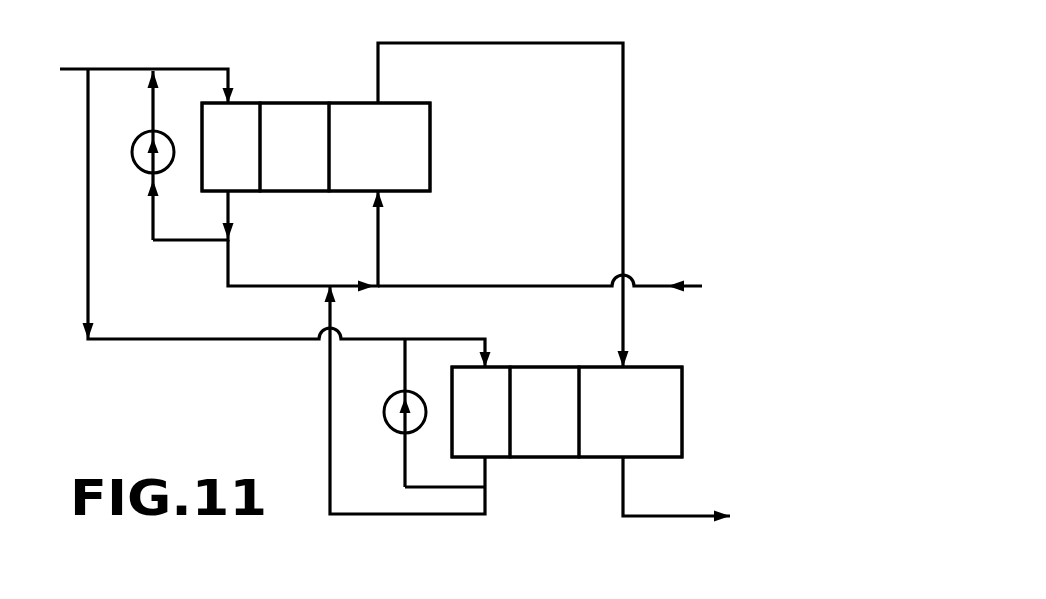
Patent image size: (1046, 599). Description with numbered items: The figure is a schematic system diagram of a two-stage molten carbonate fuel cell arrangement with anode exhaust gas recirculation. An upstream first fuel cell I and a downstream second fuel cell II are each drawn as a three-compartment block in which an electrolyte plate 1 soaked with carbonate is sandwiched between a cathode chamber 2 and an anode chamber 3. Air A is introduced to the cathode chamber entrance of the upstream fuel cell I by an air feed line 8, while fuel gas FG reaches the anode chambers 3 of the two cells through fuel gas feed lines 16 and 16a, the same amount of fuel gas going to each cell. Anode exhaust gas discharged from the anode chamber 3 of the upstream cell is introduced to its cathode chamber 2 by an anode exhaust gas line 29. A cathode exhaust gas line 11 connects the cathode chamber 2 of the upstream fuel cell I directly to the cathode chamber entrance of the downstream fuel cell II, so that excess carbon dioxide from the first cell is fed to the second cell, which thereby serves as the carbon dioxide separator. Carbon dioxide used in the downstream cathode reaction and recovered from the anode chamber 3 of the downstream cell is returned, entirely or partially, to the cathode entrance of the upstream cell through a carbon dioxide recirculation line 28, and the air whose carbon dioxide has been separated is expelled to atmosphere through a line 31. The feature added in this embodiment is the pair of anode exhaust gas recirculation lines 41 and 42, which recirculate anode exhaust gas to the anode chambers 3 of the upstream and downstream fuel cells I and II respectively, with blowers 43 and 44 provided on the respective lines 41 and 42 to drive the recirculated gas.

The first fuel cell I is at (313, 95).
The second fuel cell II is at (565, 358).
The electrolyte plate 1 is at (288, 182).
The cathode chamber 2 is at (422, 168).
The anode chamber 3 is at (207, 138).
The air feed line 8 is at (657, 285).
The cathode exhaust gas line 11 is at (553, 13).
The fuel gas feed line 16 is at (167, 35).
The fuel gas feed line 16a is at (88, 277).
The CO2 recirculation line 28 is at (328, 447).
The anode exhaust gas line 29 is at (290, 287).
The line 31 is at (643, 520).
The anode exhaust gas recirculation line 41 is at (200, 243).
The anode exhaust gas recirculation line 42 is at (443, 490).
The blower 43 is at (133, 158).
The blower 44 is at (385, 422).